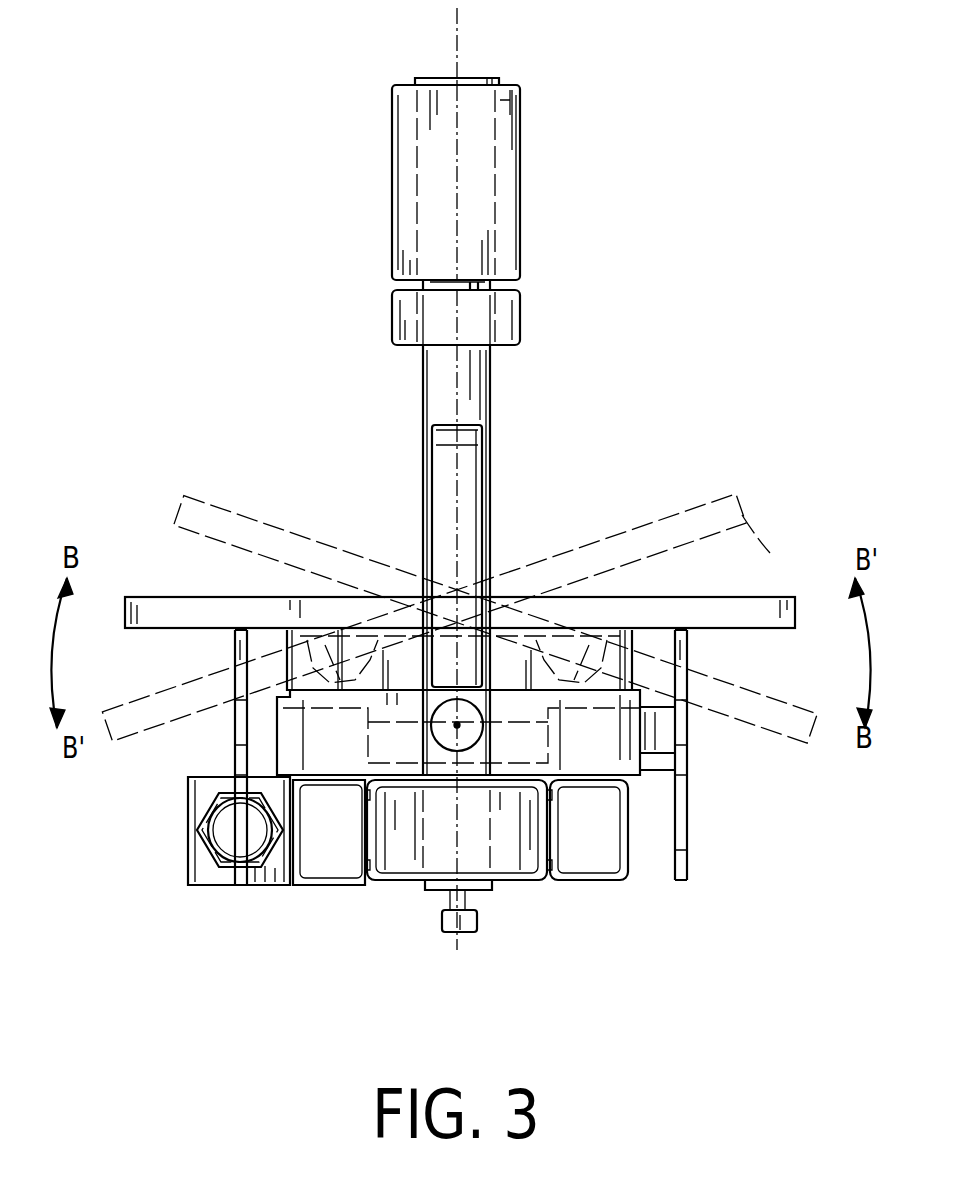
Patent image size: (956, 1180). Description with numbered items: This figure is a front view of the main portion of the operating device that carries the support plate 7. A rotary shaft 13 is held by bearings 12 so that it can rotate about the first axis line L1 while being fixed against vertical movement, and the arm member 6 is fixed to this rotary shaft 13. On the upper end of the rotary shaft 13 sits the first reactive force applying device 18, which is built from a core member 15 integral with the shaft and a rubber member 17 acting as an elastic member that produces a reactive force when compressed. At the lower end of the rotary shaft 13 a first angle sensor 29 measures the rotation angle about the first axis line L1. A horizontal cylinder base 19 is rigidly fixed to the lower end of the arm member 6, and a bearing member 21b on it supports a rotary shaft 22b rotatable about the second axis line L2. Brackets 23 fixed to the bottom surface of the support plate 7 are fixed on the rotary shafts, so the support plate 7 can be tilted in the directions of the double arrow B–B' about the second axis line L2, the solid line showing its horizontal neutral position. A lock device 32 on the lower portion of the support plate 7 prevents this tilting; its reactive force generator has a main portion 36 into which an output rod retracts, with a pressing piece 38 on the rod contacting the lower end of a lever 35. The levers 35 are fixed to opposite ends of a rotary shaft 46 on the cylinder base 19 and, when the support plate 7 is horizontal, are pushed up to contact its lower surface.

The first axis line L1 is at (459, 22).
The second axis line L2 is at (462, 738).
The first reactive force applying device 18 is at (527, 117).
The arm member 6 is at (520, 232).
The rubber member 17 is at (403, 188).
The core member 15 is at (490, 165).
The bearings 12 is at (520, 325).
The rotary shaft 13 is at (480, 400).
The support plate 7 is at (767, 604).
The brackets 23 is at (512, 660).
The rotary shaft 22b is at (452, 738).
The cylinder base 19 is at (372, 840).
The first angle sensor 29 is at (468, 935).
The bearing member 21b is at (660, 778).
The rotary shaft 46 is at (660, 743).
The lever 35 is at (238, 752).
The lock device 32 is at (170, 860).
The pressing piece 38 is at (240, 838).
The main portion 36 is at (265, 885).